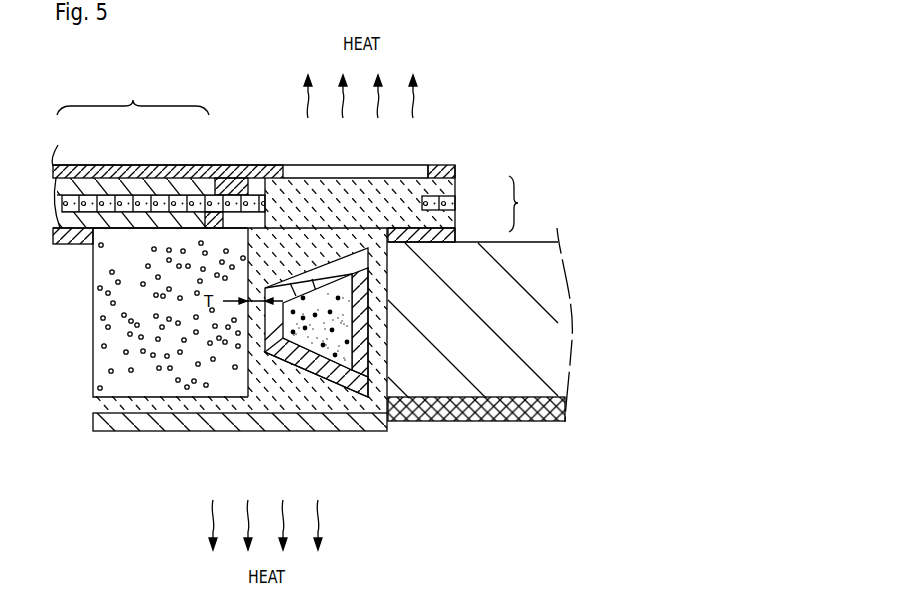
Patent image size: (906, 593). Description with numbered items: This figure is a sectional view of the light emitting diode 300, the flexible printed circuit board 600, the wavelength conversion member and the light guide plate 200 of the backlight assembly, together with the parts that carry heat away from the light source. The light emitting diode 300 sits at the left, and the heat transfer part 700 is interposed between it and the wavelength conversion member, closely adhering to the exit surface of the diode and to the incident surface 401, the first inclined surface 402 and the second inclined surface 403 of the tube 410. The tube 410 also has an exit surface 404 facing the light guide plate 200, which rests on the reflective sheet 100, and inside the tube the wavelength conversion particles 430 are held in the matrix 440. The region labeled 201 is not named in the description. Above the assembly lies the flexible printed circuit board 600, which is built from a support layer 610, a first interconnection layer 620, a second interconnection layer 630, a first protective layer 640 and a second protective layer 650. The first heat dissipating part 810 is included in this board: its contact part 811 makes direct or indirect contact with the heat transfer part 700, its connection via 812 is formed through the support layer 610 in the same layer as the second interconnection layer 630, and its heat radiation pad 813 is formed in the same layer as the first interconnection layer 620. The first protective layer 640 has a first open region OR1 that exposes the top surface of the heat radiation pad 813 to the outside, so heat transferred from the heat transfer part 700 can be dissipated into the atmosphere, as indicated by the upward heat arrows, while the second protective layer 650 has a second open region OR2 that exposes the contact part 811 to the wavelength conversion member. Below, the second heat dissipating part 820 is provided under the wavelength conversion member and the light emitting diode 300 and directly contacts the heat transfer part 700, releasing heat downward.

The reflective sheet 100 is at (510, 418).
The light guide plate 200 is at (468, 398).
The opening of insulating layer 201 is at (388, 292).
The light emitting diode 300 is at (145, 390).
The incident surface 401 is at (252, 355).
The first inclined surface 402 is at (310, 247).
The second inclined surface 403 is at (330, 374).
The exit surface 404 is at (388, 342).
The tube 410 is at (348, 375).
The wavelength conversion particles 430 is at (305, 365).
The matrix 440 is at (366, 398).
The flexible printed circuit board 600 is at (168, 123).
The support layer 610 is at (170, 204).
The first interconnection layer 620 is at (137, 193).
The second interconnection layer 630 is at (183, 220).
The first protective layer 640 is at (103, 165).
The second protective layer 650 is at (63, 165).
The heat transfer part 700 is at (247, 323).
The first heat dissipating part 810 is at (500, 203).
The contact part 811 is at (380, 223).
The connection via 812 is at (387, 203).
The heat radiation pad 813 is at (380, 188).
The second heat dissipating part 820 is at (207, 423).
The first open region OR1 is at (420, 167).
The second open region OR2 is at (273, 233).